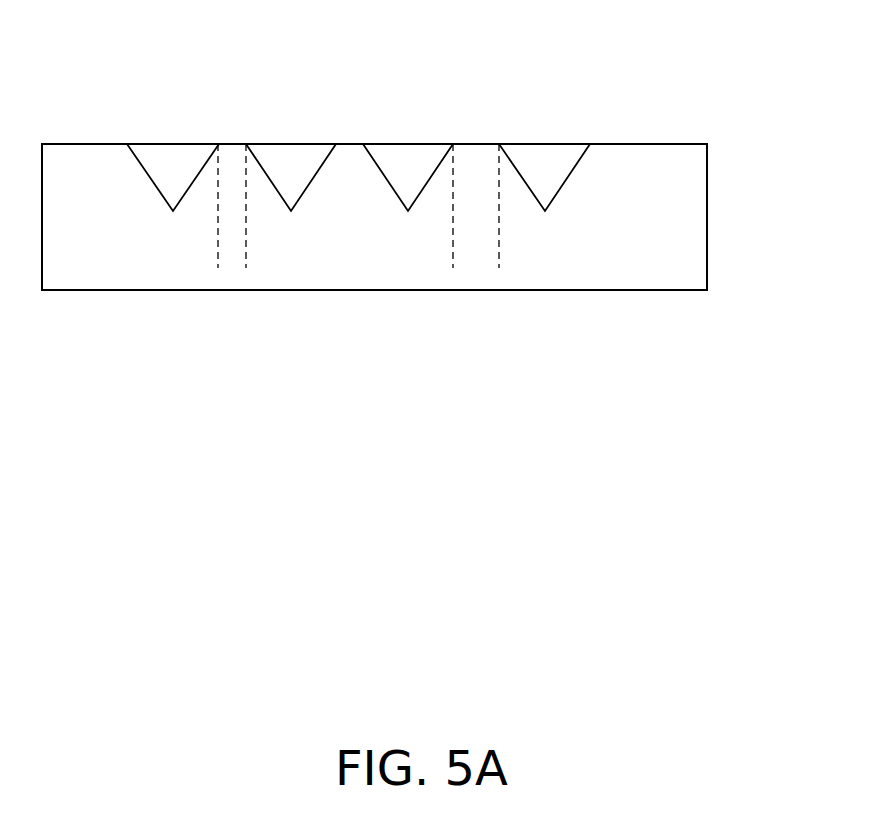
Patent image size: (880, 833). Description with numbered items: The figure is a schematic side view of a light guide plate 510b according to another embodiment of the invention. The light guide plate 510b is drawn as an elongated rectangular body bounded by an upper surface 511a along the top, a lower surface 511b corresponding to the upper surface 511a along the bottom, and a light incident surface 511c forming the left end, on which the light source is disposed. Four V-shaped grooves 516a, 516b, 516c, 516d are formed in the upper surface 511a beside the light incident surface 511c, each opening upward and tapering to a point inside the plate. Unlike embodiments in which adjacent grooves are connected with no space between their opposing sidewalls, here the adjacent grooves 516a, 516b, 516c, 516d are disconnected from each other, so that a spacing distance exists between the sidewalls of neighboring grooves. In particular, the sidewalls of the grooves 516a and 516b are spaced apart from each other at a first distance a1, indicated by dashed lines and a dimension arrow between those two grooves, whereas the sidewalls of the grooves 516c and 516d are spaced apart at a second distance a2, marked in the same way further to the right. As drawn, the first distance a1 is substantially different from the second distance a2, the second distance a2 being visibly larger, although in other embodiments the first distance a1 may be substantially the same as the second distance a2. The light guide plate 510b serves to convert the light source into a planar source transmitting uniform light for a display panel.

The light guide plate 510b is at (698, 209).
The upper surface 511a is at (683, 143).
The lower surface 511b is at (685, 293).
The light incident surface 511c is at (95, 255).
The groove 516a is at (174, 194).
The groove 516b is at (292, 194).
The groove 516c is at (409, 194).
The groove 516d is at (546, 194).
The first distance a1 is at (265, 263).
The second distance a2 is at (517, 263).